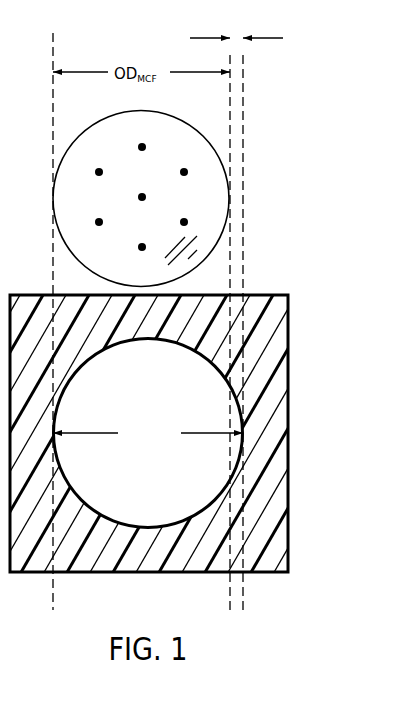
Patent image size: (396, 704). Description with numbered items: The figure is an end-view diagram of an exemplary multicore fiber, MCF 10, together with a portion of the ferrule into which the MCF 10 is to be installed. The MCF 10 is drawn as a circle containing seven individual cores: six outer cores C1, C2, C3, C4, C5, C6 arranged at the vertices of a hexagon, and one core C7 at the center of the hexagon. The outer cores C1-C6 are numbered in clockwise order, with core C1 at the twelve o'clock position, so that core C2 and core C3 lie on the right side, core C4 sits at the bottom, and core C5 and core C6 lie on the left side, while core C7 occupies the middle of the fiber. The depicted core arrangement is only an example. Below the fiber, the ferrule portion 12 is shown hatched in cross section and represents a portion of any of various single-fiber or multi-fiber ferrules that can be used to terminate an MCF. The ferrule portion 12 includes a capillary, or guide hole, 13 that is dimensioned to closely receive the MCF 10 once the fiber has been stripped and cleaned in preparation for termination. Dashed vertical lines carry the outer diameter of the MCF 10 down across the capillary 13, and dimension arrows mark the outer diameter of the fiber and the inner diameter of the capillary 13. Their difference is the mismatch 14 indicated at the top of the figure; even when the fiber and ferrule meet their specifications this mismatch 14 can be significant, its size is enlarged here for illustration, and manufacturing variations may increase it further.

The multicore fiber (MCF) 10 is at (213, 200).
The ferrule portion 12 is at (277, 433).
The capillary (guide hole) 13 is at (139, 374).
The mismatch 14 is at (300, 26).
The outer core C1 is at (150, 140).
The outer core C2 is at (193, 164).
The outer core C3 is at (193, 214).
The outer core C4 is at (150, 240).
The outer core C5 is at (107, 214).
The outer core C6 is at (107, 164).
The center core C7 is at (150, 190).